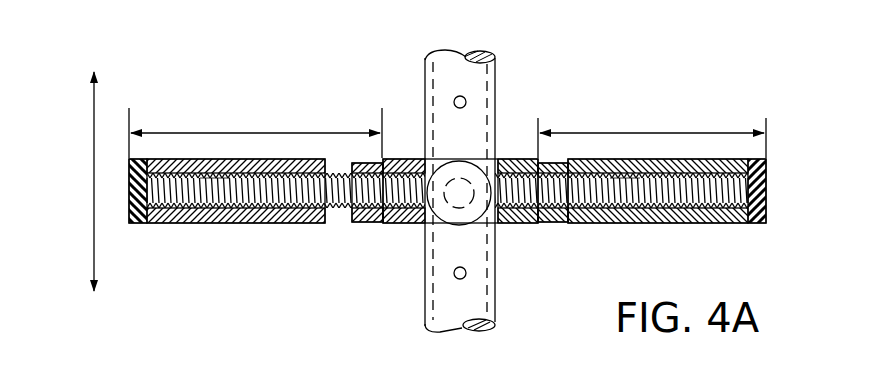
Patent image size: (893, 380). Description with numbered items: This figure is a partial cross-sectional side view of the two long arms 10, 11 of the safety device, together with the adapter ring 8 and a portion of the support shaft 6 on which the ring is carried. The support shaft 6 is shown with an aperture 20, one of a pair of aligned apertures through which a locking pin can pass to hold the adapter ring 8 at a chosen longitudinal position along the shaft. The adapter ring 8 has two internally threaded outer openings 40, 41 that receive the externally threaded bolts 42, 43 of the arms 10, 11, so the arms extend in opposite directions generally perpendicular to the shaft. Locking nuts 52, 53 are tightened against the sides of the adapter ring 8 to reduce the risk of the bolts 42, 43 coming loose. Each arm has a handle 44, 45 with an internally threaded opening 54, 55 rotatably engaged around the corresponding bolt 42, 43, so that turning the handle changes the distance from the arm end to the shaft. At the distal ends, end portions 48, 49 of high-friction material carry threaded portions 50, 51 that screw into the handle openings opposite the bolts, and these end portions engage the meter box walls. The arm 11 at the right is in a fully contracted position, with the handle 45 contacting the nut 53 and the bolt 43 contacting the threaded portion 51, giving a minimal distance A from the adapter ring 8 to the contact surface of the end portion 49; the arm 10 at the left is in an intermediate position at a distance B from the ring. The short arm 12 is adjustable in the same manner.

The long arm 10 is at (183, 100).
The long arm 11 is at (704, 118).
The support shaft 6 is at (443, 67).
The adapter ring 8 is at (410, 157).
The short arm 12 is at (483, 158).
The aperture 20 is at (467, 100).
The outer opening 40 is at (403, 200).
The outer opening 41 is at (520, 200).
The bolt 42 is at (335, 207).
The bolt 43 is at (585, 203).
The handle 44 is at (257, 225).
The handle 45 is at (667, 223).
The end portion 48 is at (133, 224).
The end portion 49 is at (750, 225).
The threaded portion 50 is at (181, 207).
The threaded portion 51 is at (722, 205).
The locking nut 52 is at (368, 222).
The locking nut 53 is at (552, 223).
The internally threaded opening 54 is at (213, 207).
The internally threaded opening 55 is at (628, 205).